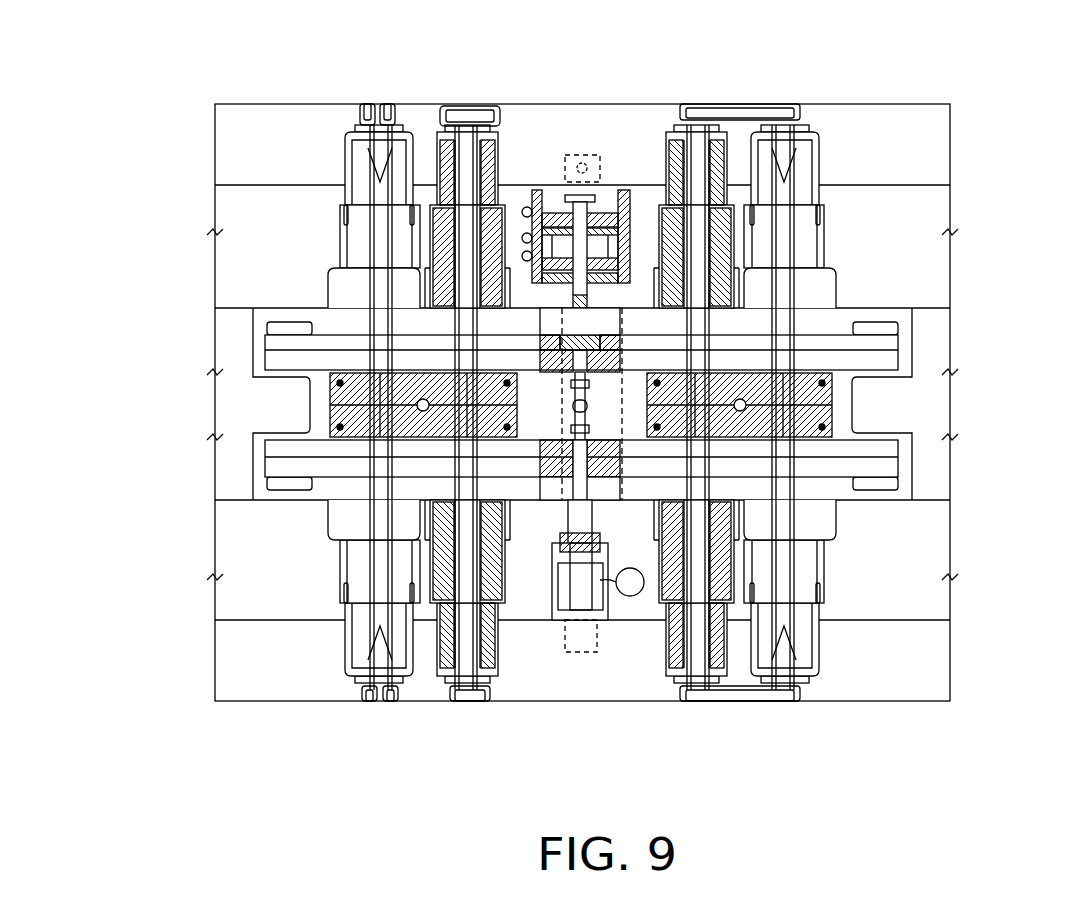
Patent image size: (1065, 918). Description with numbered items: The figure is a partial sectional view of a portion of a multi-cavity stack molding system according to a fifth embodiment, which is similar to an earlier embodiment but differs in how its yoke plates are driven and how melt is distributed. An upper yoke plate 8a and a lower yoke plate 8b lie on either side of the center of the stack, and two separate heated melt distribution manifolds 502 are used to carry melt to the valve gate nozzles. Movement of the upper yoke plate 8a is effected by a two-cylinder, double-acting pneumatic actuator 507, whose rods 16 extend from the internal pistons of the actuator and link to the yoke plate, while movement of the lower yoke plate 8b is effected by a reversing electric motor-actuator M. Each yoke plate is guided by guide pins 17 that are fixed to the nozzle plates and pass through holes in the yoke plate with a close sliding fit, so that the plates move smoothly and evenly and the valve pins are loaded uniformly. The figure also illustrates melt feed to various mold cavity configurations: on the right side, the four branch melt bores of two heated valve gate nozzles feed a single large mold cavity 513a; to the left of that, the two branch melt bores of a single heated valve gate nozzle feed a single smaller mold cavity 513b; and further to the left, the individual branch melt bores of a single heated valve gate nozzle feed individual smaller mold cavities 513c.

The upper yoke plate 8a is at (890, 345).
The lower yoke plate 8b is at (890, 452).
The heated melt distribution manifold 502 is at (335, 405).
The two-cylinder, double-acting pneumatic actuator 507 is at (575, 150).
The rod 16 is at (622, 190).
The guide pin 17 is at (532, 300).
The single large mold cavity 513a is at (730, 688).
The single smaller mold cavity 513b is at (463, 700).
The individual smaller mold cavities 513c is at (360, 700).